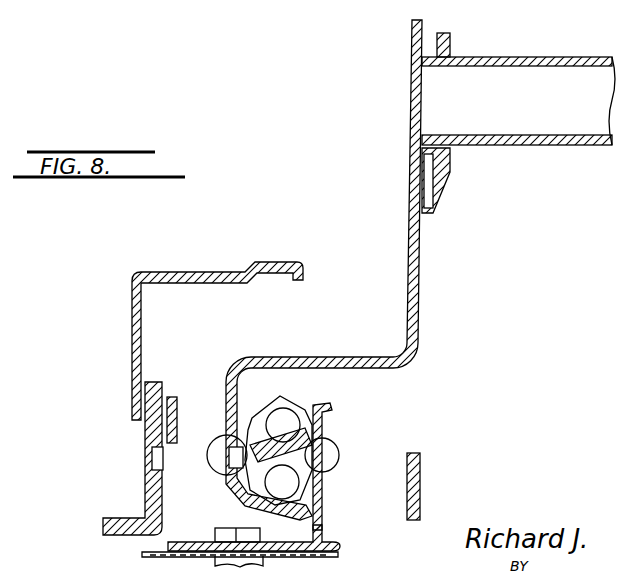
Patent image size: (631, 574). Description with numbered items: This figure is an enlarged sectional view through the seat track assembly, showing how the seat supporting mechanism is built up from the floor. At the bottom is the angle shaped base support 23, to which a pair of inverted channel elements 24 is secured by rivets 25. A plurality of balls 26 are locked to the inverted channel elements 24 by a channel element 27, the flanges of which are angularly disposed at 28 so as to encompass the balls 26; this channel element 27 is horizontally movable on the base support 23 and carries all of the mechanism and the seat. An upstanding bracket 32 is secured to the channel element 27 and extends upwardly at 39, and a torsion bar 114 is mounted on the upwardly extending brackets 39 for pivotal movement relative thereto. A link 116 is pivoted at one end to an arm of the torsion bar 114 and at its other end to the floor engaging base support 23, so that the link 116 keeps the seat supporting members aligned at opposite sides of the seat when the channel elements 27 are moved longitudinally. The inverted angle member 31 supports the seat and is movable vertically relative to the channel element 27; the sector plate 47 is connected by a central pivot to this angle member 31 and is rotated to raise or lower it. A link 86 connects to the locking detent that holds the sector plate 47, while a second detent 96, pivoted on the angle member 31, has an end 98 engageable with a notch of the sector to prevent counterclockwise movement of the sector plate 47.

The torsion bar 114 is at (570, 53).
The upwardly extending bracket portion 39 is at (415, 258).
The inverted angle member 31 is at (130, 328).
The sector plate 47 is at (161, 381).
The end of second detent 98 is at (151, 458).
The link 86 is at (175, 398).
The upstanding bracket 32 is at (249, 404).
The second detent 96 is at (166, 487).
The rivet 25 is at (326, 450).
The ball 26 is at (340, 482).
The angularly disposed flange 28 is at (270, 510).
The channel element 27 is at (262, 478).
The inverted channel element 24 is at (325, 425).
The angle shaped base support 23 is at (308, 535).
The link 116 is at (423, 457).